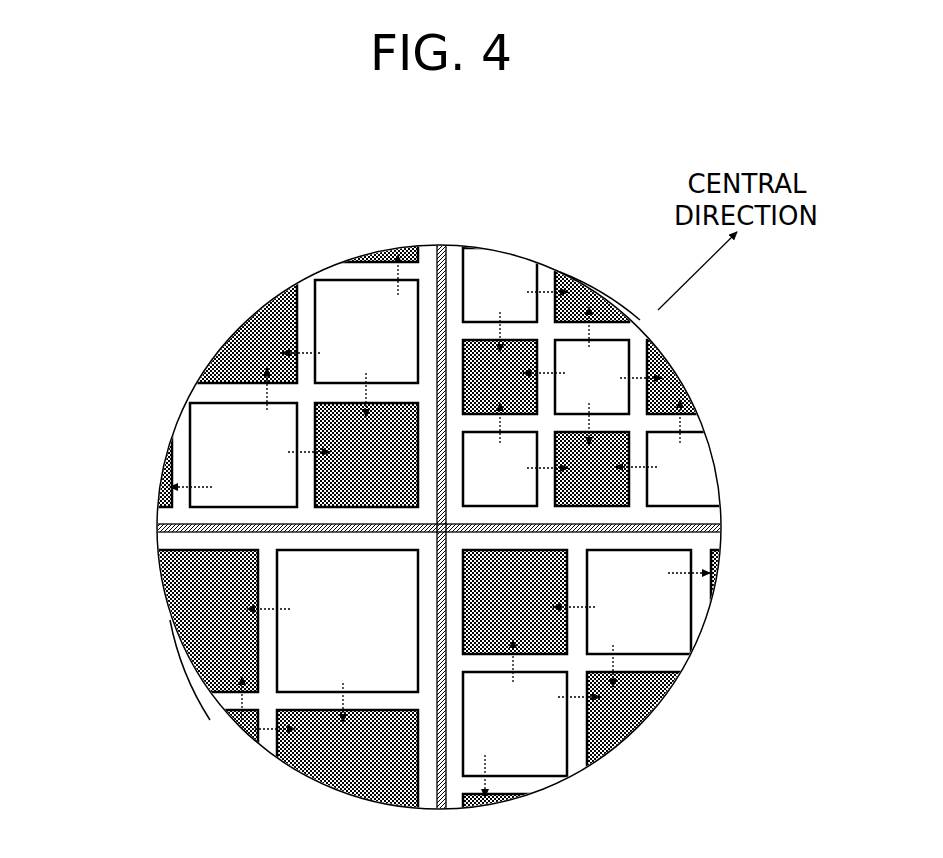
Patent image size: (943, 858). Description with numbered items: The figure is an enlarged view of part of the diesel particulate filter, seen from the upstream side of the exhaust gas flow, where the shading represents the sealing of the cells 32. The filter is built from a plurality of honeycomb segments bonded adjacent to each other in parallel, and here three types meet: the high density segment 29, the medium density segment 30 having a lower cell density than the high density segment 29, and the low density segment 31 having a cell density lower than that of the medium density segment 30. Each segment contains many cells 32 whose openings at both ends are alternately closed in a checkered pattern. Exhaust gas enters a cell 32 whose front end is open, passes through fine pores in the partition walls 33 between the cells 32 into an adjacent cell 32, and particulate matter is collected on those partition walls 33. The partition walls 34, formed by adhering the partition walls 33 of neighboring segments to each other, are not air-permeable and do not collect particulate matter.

The high density segment 29 is at (600, 280).
The medium density segment 30 is at (278, 283).
The low density segment 31 is at (187, 672).
The cell 32 is at (337, 297).
The partition wall 33 is at (303, 292).
The partition wall 34 is at (443, 243).